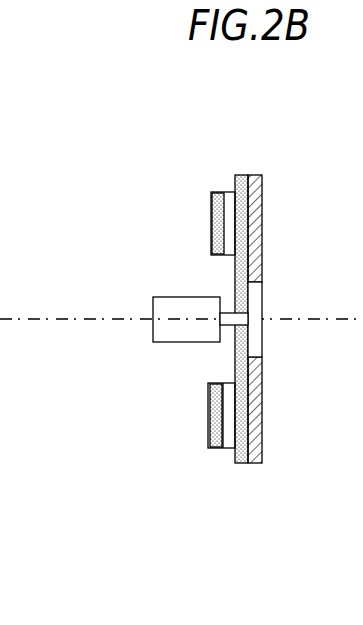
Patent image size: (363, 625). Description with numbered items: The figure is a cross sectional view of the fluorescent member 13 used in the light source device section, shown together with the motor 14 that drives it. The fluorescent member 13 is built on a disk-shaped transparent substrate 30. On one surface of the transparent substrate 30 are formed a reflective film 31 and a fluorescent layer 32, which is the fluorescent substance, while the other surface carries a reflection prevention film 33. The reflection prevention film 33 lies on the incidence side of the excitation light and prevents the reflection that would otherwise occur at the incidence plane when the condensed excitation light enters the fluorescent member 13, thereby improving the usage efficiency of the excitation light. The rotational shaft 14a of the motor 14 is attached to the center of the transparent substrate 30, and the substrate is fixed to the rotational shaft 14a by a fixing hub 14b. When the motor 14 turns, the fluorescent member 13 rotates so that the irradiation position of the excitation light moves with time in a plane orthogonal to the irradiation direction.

The fluorescent member 13 is at (247, 351).
The transparent substrate 30 is at (236, 175).
The reflection prevention film 33 is at (258, 175).
The reflective film 31 is at (230, 450).
The fluorescent layer 32 is at (218, 448).
The motor 14 is at (179, 313).
The rotational shaft 14a is at (226, 322).
The fixing hub 14b is at (260, 305).